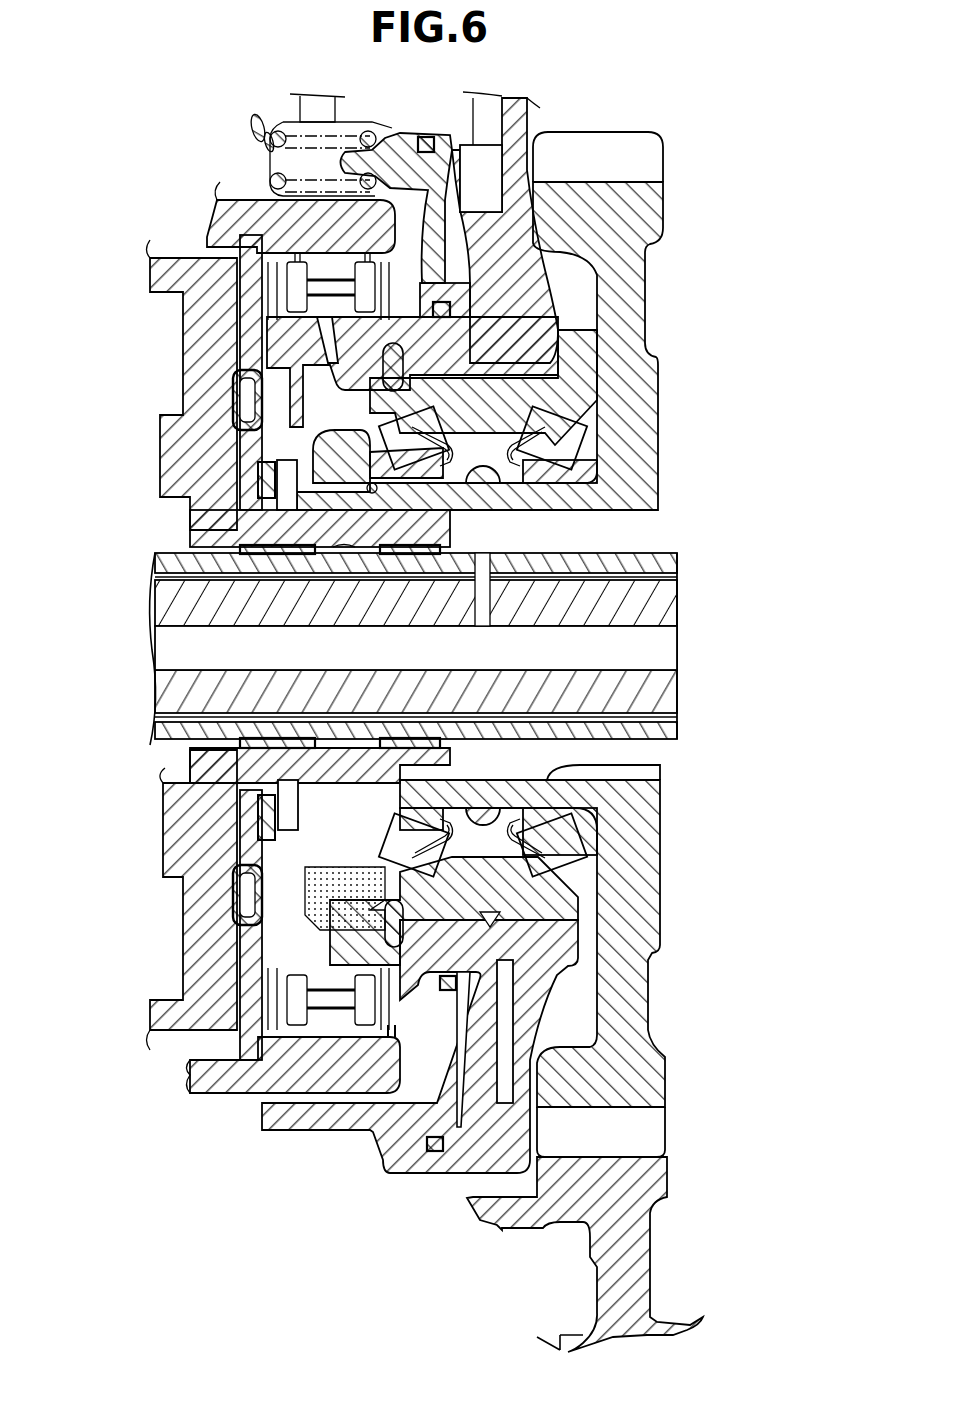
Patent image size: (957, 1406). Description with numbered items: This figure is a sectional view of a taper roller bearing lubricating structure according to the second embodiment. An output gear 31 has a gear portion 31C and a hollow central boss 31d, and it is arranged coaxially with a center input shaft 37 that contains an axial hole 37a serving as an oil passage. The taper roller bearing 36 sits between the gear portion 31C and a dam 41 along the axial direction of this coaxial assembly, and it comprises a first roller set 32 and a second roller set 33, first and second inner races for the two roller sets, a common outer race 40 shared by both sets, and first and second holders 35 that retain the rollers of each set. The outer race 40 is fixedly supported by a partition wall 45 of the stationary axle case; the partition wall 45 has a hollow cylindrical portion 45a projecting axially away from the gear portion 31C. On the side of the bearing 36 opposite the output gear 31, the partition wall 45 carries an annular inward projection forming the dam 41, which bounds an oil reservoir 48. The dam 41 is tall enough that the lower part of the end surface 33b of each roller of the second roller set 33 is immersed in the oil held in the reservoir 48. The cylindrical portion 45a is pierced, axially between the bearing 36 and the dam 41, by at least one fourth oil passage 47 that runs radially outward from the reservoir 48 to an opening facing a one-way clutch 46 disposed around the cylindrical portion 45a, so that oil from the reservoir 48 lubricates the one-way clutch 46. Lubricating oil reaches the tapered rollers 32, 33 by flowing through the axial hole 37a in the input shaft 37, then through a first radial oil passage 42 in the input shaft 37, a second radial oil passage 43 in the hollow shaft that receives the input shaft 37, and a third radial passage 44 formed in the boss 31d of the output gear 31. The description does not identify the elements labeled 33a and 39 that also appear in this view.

The output gear 31 is at (623, 292).
The gear portion 31C is at (630, 263).
The hollow central boss 31d is at (552, 782).
The first roller set 32 is at (587, 433).
The second roller set 33 is at (340, 417).
The seal 33a is at (245, 398).
The end surface 33b is at (305, 823).
The holder 35 is at (560, 422).
The taper roller bearing 36 is at (601, 457).
The center input shaft 37 is at (655, 607).
The axial hole 37a is at (658, 652).
The tapered roller bearing 39 is at (580, 828).
The common outer race 40 is at (568, 912).
The dam 41 is at (300, 885).
The first oil passage 42 is at (485, 605).
The second oil passage 43 is at (484, 607).
The third passage 44 is at (485, 505).
The partition wall 45 is at (560, 372).
The hollow cylindrical portion 45a is at (355, 960).
The one-way clutch 46 is at (278, 260).
The fourth oil passage 47 is at (330, 940).
The oil reservoir 48 is at (310, 895).